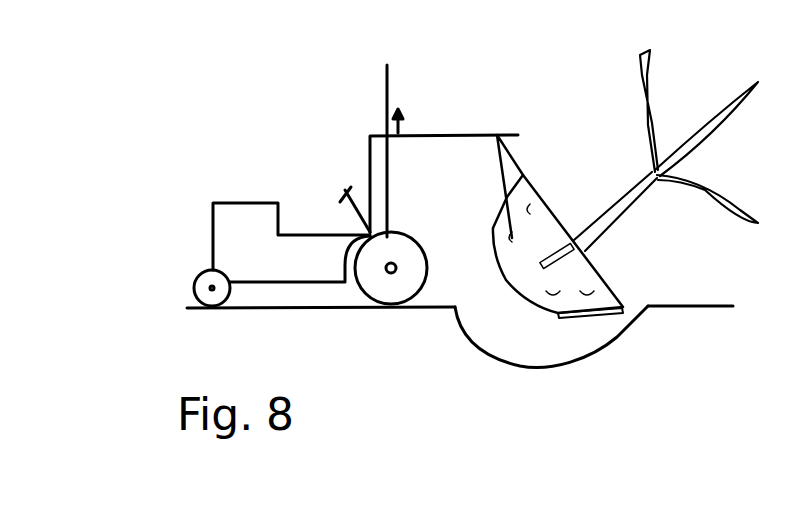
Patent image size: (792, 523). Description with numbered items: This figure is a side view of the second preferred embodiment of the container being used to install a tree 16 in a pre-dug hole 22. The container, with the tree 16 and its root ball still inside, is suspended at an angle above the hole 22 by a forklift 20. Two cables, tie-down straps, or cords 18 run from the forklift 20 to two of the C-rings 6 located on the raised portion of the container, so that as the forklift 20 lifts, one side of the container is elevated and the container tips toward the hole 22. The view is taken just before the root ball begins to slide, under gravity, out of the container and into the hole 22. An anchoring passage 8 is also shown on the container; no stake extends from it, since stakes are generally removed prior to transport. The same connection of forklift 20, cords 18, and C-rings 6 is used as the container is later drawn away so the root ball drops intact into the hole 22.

The forklift 20 is at (225, 226).
The tie-down strap, cable, or cord 18 is at (518, 149).
The C-ring 6 is at (540, 226).
The anchoring passage 8 is at (624, 306).
The tree 16 is at (716, 131).
The pre-dug hole 22 is at (525, 356).